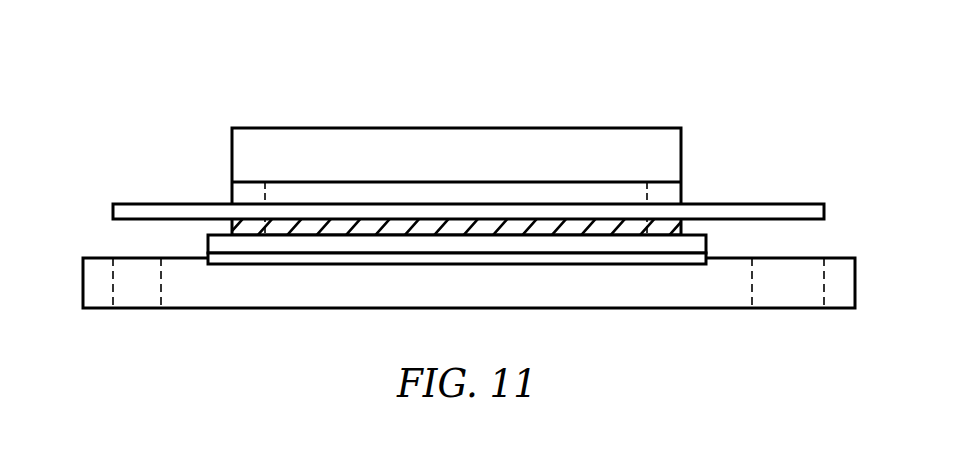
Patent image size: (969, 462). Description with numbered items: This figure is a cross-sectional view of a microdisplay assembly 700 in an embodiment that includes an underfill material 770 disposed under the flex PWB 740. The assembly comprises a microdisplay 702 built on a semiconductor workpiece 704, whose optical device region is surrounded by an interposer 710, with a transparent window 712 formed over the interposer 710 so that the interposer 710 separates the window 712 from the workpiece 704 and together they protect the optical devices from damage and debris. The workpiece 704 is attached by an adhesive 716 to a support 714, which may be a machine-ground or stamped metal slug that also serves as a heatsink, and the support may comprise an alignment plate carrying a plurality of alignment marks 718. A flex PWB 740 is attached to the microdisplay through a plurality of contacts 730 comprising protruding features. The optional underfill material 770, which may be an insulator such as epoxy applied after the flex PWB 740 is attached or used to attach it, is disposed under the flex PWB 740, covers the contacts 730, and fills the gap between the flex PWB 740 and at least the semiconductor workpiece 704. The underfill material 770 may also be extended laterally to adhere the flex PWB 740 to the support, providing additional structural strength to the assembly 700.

The microdisplay assembly 700 is at (599, 86).
The microdisplay 702 is at (865, 127).
The semiconductor workpiece 704 is at (625, 243).
The interposer 710 is at (672, 193).
The transparent window 712 is at (457, 135).
The support 714 is at (197, 308).
The adhesive 716 is at (310, 257).
The alignment marks 718 is at (133, 277).
The plurality of contacts 730 is at (221, 227).
The flex PWB 740 is at (789, 210).
The underfill material 770 is at (393, 225).